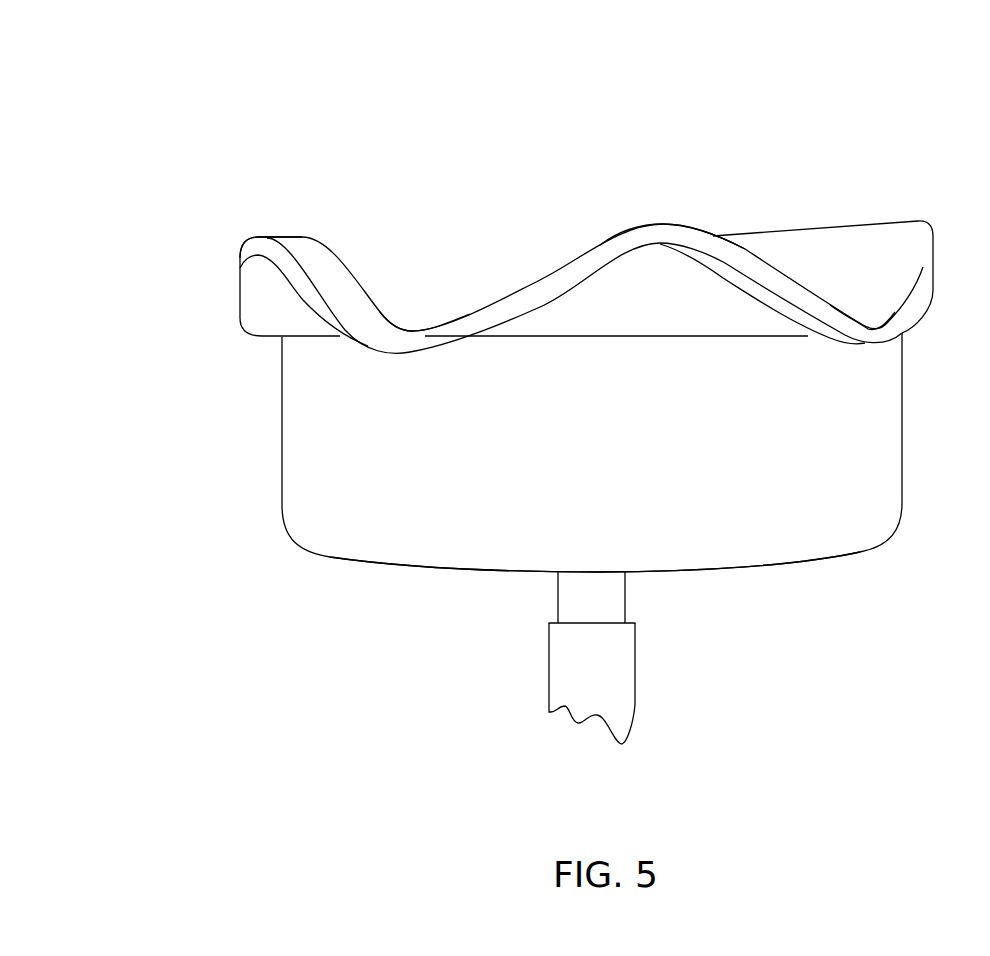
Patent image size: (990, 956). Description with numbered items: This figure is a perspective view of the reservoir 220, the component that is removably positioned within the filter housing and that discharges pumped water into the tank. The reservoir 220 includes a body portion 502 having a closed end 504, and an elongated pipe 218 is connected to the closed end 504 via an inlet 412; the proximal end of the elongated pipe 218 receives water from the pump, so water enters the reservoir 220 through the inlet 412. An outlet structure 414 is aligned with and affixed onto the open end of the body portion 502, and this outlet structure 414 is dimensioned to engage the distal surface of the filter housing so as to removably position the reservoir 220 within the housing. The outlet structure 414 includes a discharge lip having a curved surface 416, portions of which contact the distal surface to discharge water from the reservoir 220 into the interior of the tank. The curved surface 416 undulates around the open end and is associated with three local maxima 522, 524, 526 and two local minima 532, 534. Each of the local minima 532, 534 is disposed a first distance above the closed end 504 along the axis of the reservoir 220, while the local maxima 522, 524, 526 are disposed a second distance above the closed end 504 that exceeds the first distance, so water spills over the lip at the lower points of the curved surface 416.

The reservoir 220 is at (794, 84).
The elongated pipe 218 is at (549, 688).
The inlet 412 is at (568, 593).
The outlet structure 414 is at (227, 304).
The curved surface 416 is at (325, 272).
The body portion 502 is at (303, 425).
The closed end 504 is at (398, 578).
The local maximum 522 is at (286, 223).
The local maximum 524 is at (674, 211).
The local maximum 526 is at (932, 206).
The local minimum 532 is at (408, 320).
The local minimum 534 is at (873, 316).